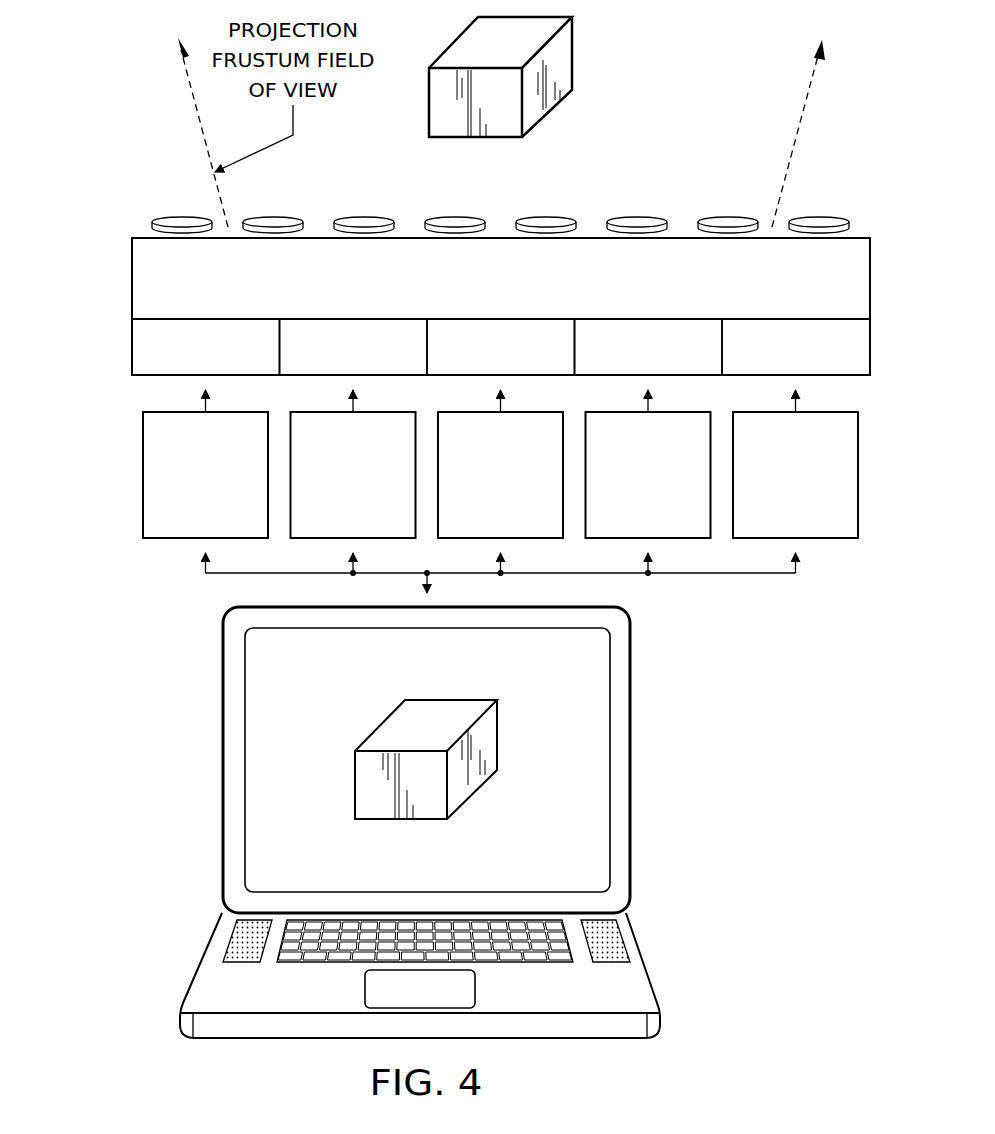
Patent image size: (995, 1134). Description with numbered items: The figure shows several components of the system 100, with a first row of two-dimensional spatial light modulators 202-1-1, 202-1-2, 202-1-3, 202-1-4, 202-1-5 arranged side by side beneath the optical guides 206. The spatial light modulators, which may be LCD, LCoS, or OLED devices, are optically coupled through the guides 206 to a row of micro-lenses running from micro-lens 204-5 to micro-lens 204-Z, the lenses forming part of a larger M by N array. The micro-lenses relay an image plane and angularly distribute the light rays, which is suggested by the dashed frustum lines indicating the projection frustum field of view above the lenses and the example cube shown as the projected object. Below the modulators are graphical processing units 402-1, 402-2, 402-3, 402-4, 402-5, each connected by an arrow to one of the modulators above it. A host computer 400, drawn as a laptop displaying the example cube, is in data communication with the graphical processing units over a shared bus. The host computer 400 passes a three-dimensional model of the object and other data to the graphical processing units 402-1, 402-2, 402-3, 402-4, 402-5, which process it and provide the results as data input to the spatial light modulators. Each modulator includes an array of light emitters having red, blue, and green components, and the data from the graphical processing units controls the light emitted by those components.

The system 100 is at (112, 240).
The micro-lens 204-5 is at (185, 217).
The micro-lens 204-Z is at (818, 217).
The optical guides 206 is at (373, 295).
The spatial light modulator 202-1-1 is at (206, 347).
The spatial light modulator 202-1-2 is at (354, 347).
The spatial light modulator 202-1-3 is at (501, 347).
The spatial light modulator 202-1-4 is at (649, 347).
The spatial light modulator 202-1-5 is at (796, 347).
The graphical processing unit 402-1 is at (205, 464).
The graphical processing unit 402-2 is at (353, 464).
The graphical processing unit 402-3 is at (500, 464).
The graphical processing unit 402-4 is at (648, 464).
The graphical processing unit 402-5 is at (795, 464).
The host computer 400 is at (223, 758).